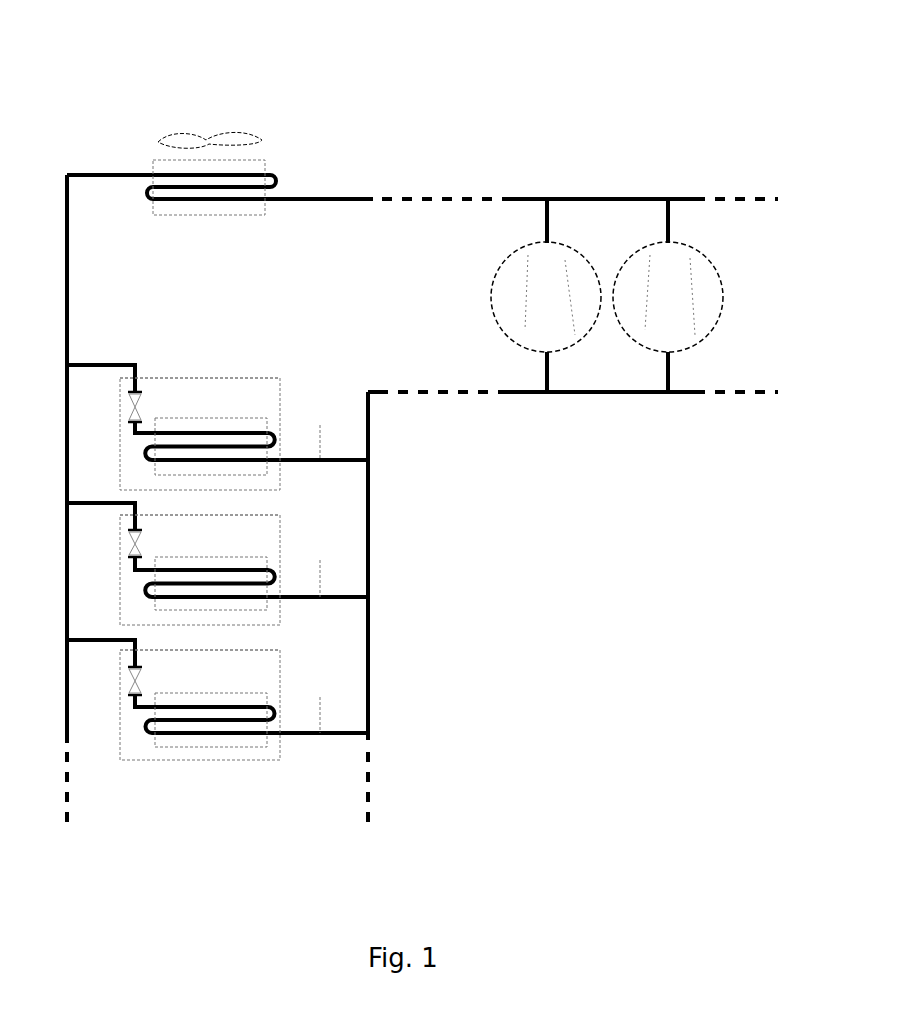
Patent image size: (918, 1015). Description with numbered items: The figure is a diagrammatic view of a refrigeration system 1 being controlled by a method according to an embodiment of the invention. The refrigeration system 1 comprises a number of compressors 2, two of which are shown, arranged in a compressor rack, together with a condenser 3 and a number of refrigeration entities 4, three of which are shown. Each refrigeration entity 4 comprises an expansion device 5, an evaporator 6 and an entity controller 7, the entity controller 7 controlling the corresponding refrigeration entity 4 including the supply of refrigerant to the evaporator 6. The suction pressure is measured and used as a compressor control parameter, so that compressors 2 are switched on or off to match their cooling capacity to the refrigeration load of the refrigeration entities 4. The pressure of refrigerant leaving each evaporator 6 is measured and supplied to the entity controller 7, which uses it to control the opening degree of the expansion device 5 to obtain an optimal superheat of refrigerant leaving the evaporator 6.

The refrigeration system 1 is at (658, 54).
The compressors 2 is at (553, 265).
The condenser 3 is at (182, 165).
The refrigeration entities 4 is at (280, 440).
The expansion device 5 is at (127, 413).
The evaporator 6 is at (172, 427).
The entity controller 7 is at (240, 390).